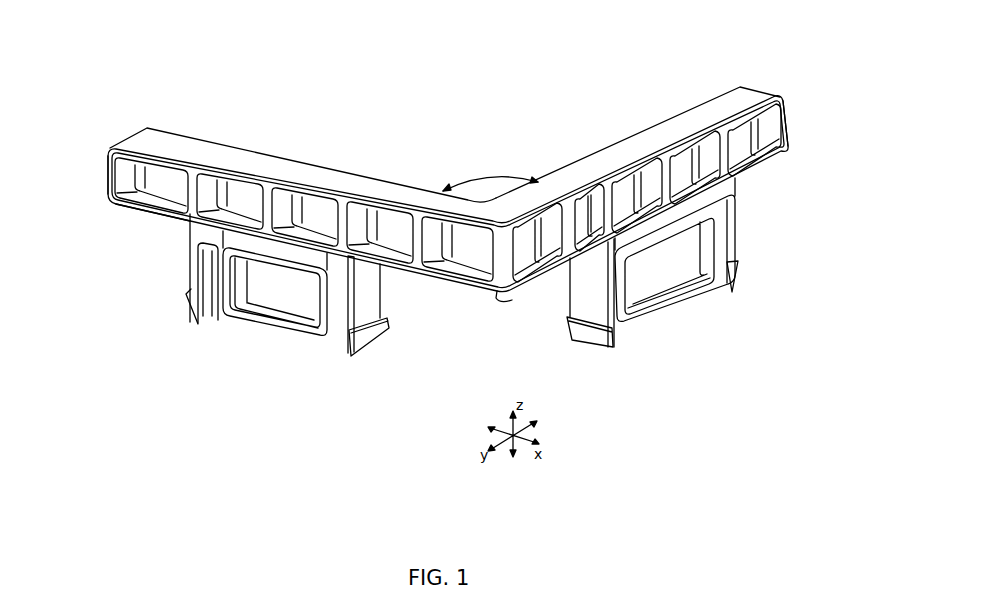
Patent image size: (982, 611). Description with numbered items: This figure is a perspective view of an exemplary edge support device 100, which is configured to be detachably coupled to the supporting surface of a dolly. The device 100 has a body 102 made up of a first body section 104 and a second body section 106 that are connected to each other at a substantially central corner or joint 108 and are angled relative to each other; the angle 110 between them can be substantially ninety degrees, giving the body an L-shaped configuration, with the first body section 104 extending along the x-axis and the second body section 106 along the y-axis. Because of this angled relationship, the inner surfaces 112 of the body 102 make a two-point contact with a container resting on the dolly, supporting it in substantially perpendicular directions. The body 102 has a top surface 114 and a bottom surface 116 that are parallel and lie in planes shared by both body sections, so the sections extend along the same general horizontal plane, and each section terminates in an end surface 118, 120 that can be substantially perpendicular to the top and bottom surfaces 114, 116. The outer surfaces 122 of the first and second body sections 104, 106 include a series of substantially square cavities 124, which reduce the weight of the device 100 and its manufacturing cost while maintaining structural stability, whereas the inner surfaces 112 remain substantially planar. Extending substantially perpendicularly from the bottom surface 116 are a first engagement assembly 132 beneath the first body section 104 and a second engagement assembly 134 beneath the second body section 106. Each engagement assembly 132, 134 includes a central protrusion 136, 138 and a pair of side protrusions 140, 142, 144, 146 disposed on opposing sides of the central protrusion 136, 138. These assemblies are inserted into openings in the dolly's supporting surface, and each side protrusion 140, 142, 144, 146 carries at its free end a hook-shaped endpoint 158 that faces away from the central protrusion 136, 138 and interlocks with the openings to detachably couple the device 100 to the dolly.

The edge support device 100 is at (498, 50).
The body 102 is at (400, 190).
The first body section 104 is at (281, 118).
The second body section 106 is at (657, 110).
The corner or joint 108 is at (513, 292).
The angle 110 is at (487, 172).
The inner surfaces 112 is at (705, 103).
The top surface 114 is at (172, 138).
The bottom surface 116 is at (128, 213).
The end surface 118 is at (108, 178).
The end surface 120 is at (790, 145).
The outer surfaces 122 is at (260, 183).
The cavities 124 is at (322, 203).
The first engagement assembly 132 is at (305, 347).
The second engagement assembly 134 is at (636, 360).
The central protrusion 136 is at (287, 330).
The central protrusion 138 is at (653, 312).
The side protrusion 140 is at (208, 268).
The side protrusion 142 is at (375, 298).
The side protrusion 144 is at (718, 278).
The side protrusion 146 is at (590, 282).
The endpoint 158 is at (190, 295).